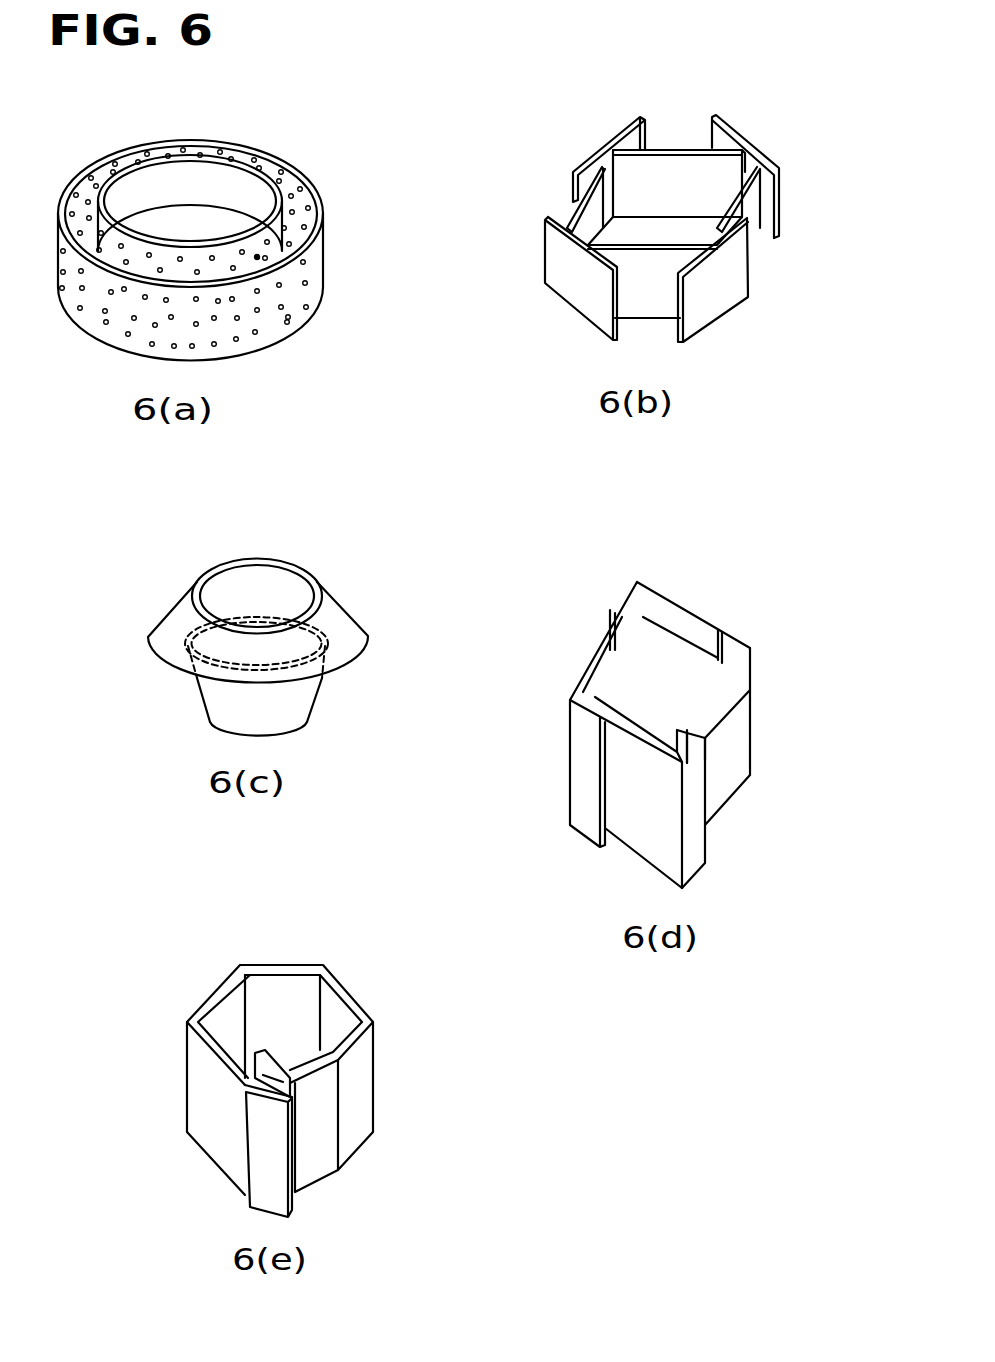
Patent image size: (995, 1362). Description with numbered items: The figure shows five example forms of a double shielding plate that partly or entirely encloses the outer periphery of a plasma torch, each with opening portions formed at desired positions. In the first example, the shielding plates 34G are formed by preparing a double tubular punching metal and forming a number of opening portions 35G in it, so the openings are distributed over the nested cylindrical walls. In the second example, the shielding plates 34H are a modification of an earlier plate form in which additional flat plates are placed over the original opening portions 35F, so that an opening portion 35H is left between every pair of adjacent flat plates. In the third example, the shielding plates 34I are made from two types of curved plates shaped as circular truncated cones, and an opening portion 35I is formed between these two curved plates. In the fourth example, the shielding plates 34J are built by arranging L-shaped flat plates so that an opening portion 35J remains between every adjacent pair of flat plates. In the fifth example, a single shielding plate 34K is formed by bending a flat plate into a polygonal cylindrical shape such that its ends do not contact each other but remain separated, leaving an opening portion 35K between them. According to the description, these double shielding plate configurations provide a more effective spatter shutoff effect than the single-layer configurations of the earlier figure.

The shielding plates 34G is at (331, 264).
The opening portions 35G is at (287, 322).
The shielding plates 34H is at (775, 248).
The opening portions 35F is at (713, 240).
The opening portion 35H is at (652, 330).
The shielding plates 34I is at (376, 631).
The opening portion 35I is at (178, 642).
The shielding plates 34J is at (755, 703).
The opening portion 35J is at (713, 630).
The shielding plate 34K is at (380, 1057).
The opening portion 35K is at (292, 1092).